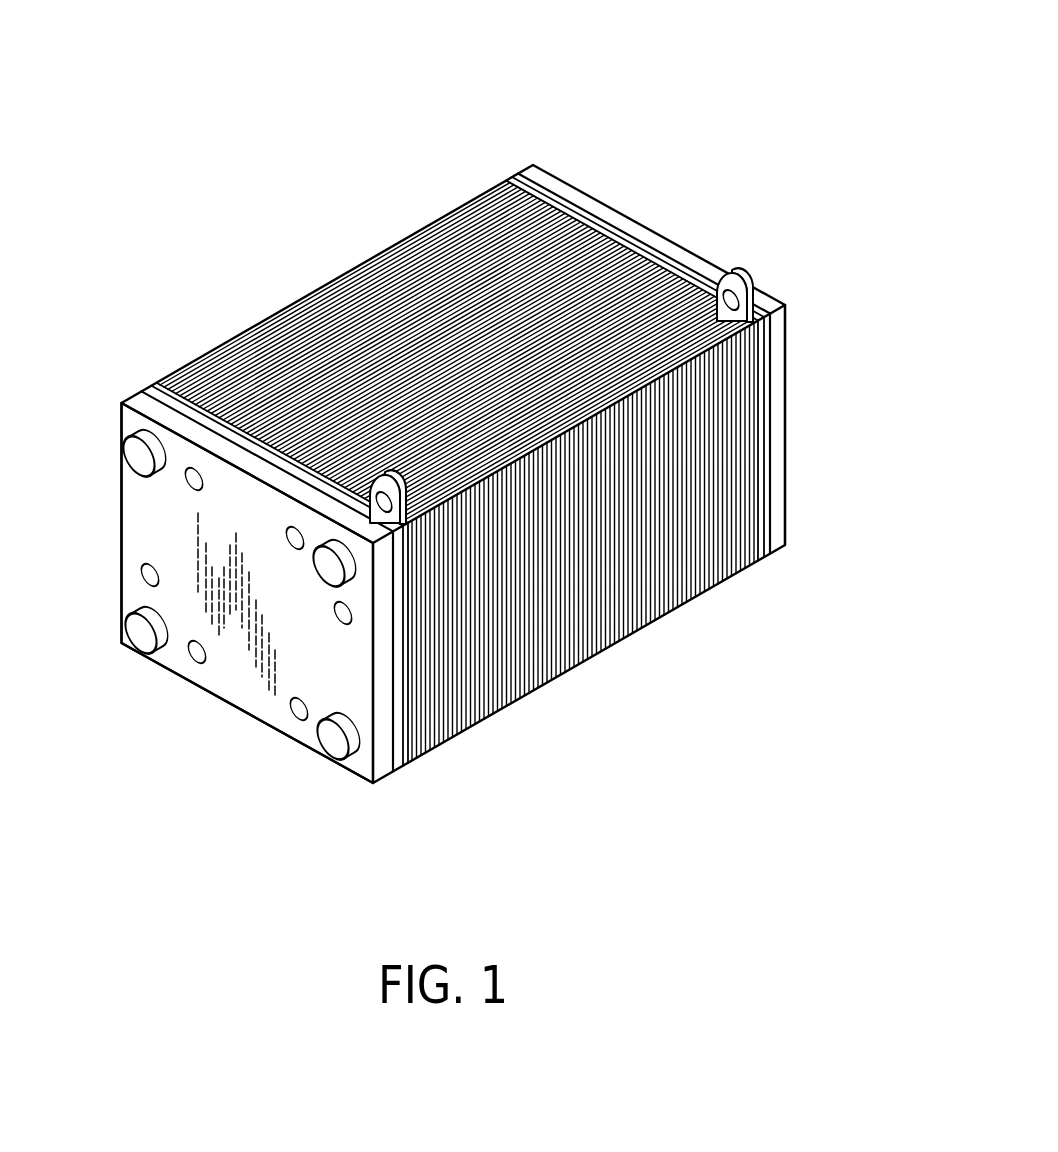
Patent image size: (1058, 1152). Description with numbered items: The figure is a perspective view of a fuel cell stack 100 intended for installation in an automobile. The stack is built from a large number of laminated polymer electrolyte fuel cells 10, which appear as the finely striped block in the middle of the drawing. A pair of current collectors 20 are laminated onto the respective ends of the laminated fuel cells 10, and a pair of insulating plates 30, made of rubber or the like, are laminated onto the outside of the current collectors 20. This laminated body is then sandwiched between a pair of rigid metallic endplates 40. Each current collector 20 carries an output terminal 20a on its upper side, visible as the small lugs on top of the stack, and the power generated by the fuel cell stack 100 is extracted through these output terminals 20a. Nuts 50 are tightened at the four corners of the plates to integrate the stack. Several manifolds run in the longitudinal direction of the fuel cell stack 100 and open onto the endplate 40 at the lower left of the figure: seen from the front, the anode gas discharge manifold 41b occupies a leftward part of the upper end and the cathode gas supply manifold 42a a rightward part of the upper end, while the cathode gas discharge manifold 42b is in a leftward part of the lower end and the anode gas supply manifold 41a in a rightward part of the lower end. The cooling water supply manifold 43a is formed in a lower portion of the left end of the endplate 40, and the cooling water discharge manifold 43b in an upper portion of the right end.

The fuel cell stack 100 is at (608, 98).
The polymer electrolyte fuel cells 10 is at (583, 651).
The current collector 20 is at (420, 762).
The output terminal 20a is at (390, 478).
The insulating plate 30 is at (403, 768).
The endplate 40 is at (381, 768).
The nut 50 is at (328, 556).
The anode gas supply manifold 41a is at (298, 712).
The anode gas discharge manifold 41b is at (290, 536).
The cathode gas supply manifold 42a is at (189, 473).
The cathode gas discharge manifold 42b is at (193, 657).
The cooling water supply manifold 43a is at (146, 574).
The cooling water discharge manifold 43b is at (338, 616).